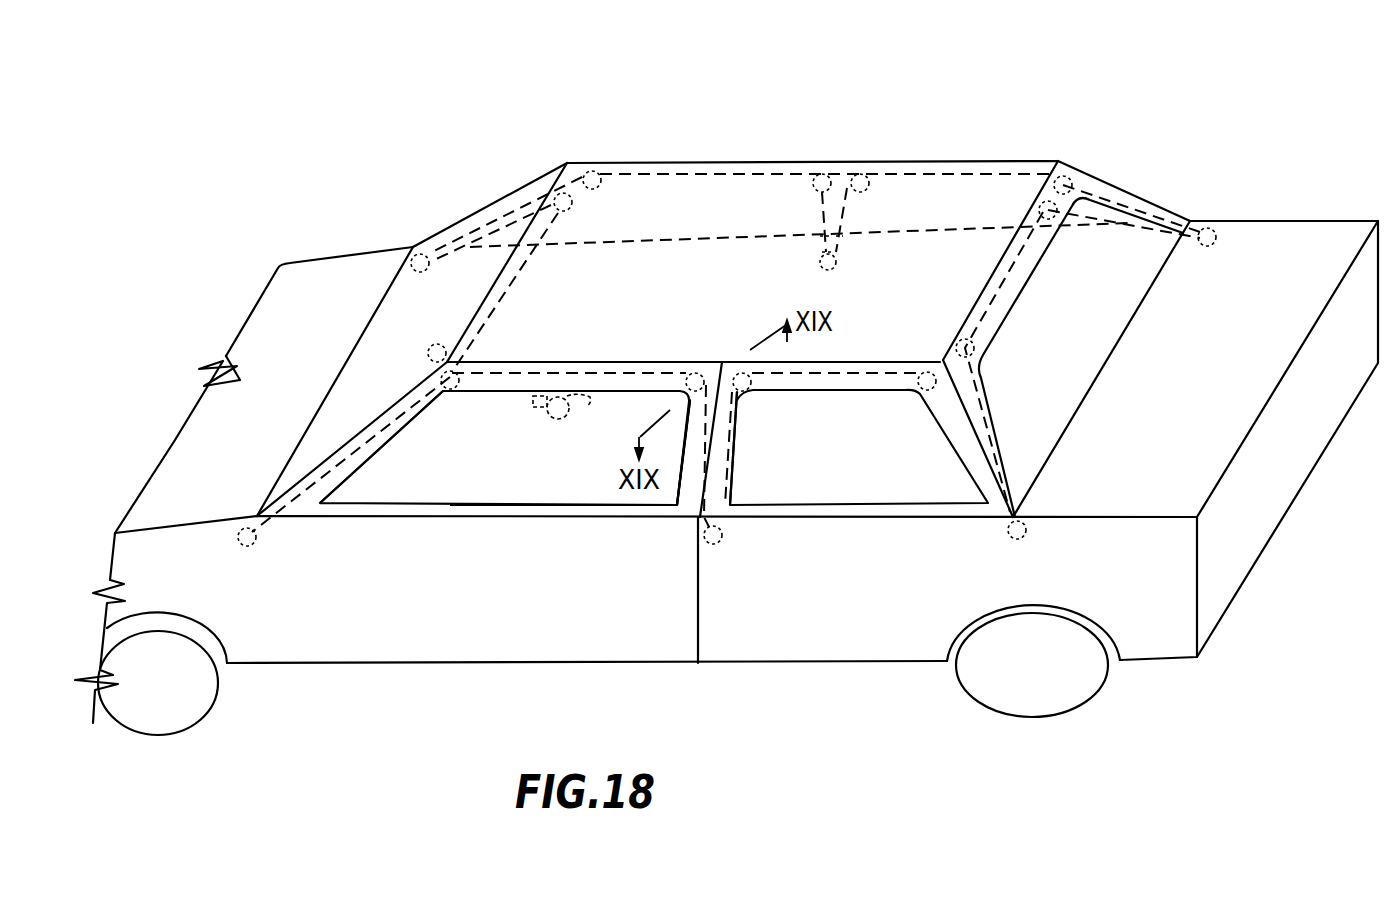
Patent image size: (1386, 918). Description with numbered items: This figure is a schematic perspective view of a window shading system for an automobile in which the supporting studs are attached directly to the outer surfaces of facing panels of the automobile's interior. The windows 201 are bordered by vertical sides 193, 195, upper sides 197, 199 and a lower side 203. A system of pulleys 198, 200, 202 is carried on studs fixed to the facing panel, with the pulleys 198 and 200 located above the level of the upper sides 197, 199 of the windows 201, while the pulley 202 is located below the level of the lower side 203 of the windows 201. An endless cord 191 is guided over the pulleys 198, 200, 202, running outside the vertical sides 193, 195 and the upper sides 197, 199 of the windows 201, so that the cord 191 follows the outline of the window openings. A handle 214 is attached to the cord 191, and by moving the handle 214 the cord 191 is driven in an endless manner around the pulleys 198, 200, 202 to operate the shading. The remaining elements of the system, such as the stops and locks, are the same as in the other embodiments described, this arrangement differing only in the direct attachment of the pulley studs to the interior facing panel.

The endless cord 191 is at (567, 395).
The vertical side 193 is at (413, 410).
The vertical side 195 is at (685, 483).
The upper side 197 is at (554, 395).
The pulley 198 is at (688, 370).
The upper side 199 is at (872, 362).
The pulley 200 is at (733, 372).
The window 201 is at (548, 463).
The pulley 202 is at (716, 541).
The lower side 203 is at (563, 469).
The handle 214 is at (533, 406).